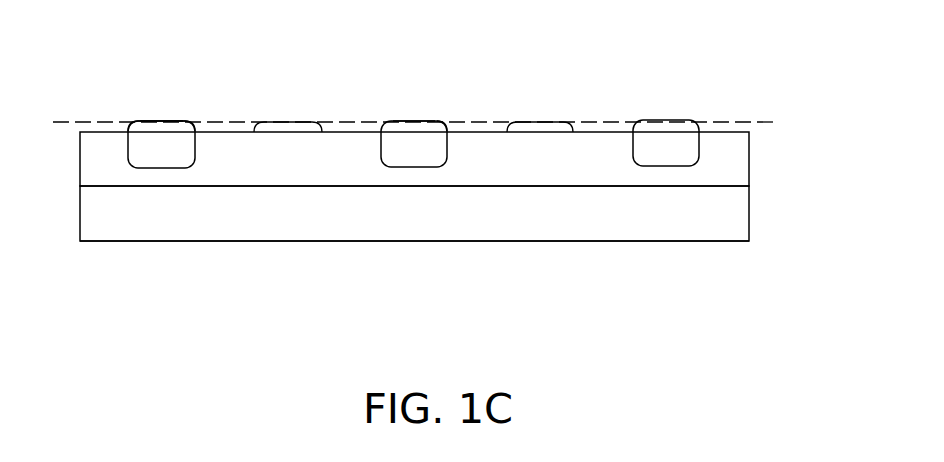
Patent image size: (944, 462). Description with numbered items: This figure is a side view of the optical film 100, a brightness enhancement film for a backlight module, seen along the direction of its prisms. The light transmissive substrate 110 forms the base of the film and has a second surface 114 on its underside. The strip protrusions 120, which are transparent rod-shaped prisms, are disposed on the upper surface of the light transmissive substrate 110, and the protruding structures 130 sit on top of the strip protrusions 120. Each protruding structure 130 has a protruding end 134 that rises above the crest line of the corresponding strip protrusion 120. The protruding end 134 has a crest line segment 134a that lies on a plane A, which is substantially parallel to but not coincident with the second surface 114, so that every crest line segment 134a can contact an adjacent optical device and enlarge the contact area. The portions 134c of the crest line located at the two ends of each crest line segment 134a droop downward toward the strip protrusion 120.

The optical film 100 is at (432, 197).
The light transmissive substrate 110 is at (722, 215).
The second surface 114 is at (703, 242).
The strip protrusions 120 is at (722, 170).
The protruding structures 130 is at (680, 152).
The protruding end 134 is at (170, 138).
The crest line segment 134a is at (158, 122).
The drooping portions of the crest line 134c is at (132, 121).